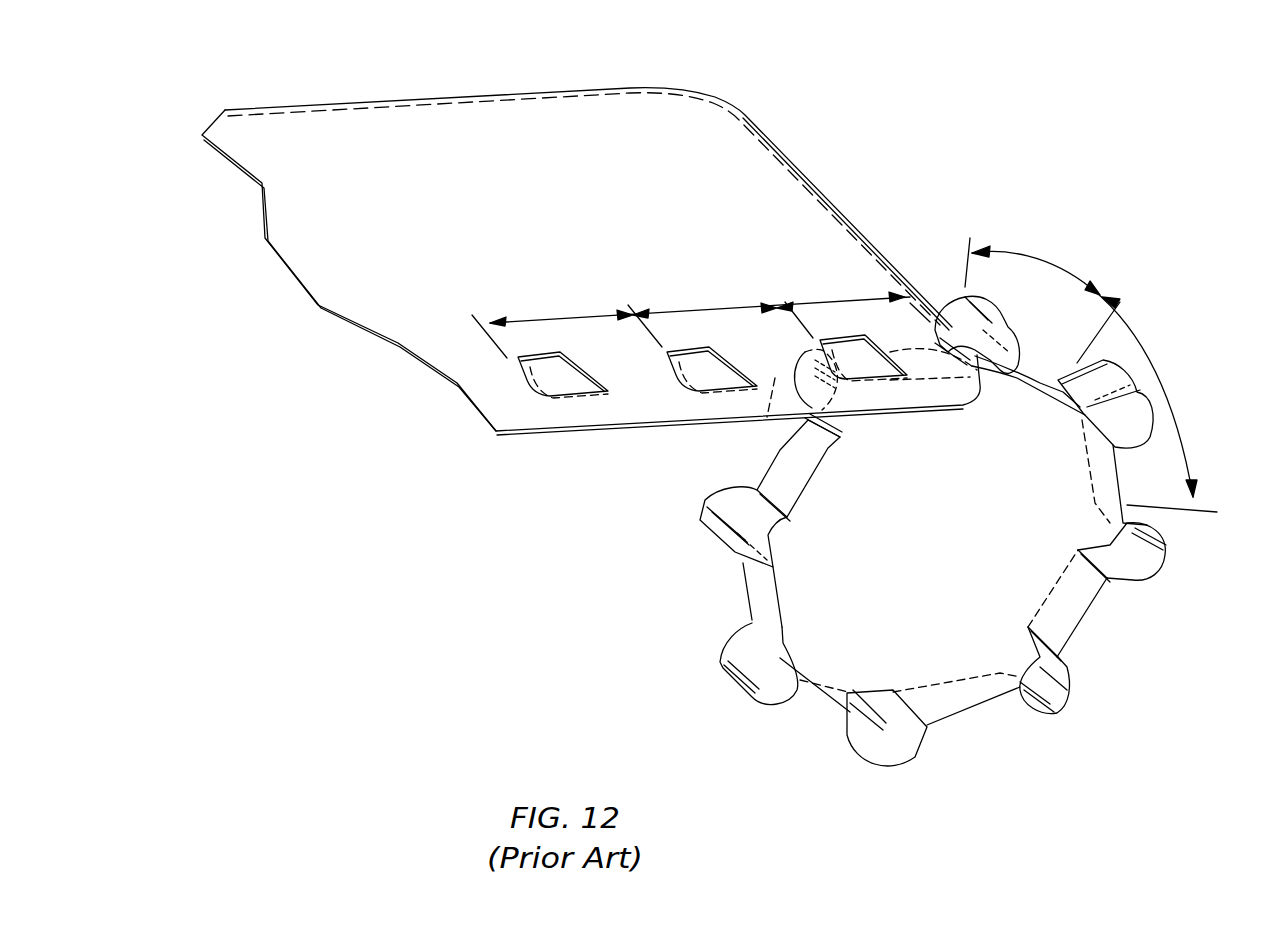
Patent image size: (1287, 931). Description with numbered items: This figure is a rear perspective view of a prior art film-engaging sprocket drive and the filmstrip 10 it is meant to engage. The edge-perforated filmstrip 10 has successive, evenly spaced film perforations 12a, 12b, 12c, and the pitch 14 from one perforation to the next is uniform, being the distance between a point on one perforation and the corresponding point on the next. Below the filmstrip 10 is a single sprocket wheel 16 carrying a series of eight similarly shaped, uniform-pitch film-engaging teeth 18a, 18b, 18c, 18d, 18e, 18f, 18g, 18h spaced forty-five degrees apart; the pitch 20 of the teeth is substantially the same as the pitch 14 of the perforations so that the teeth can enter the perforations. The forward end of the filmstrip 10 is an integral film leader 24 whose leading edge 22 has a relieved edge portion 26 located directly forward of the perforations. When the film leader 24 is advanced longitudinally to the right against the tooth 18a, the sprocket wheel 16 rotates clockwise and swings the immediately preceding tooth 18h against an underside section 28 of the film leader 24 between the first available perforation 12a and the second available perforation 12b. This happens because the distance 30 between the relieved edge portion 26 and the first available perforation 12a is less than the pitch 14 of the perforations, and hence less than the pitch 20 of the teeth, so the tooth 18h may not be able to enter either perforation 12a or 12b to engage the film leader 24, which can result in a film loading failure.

The filmstrip 10 is at (428, 86).
The film perforation 12a is at (890, 367).
The film perforation 12b is at (740, 370).
The film perforation 12c is at (590, 383).
The pitch of the film perforations 14 is at (549, 312).
The sprocket wheel 16 is at (1090, 631).
The film-engaging tooth 18a is at (950, 312).
The film-engaging tooth 18b is at (1145, 400).
The film-engaging tooth 18c is at (1167, 552).
The film-engaging tooth 18d is at (1057, 713).
The film-engaging tooth 18e is at (888, 770).
The film-engaging tooth 18f is at (747, 697).
The film-engaging tooth 18g is at (702, 520).
The film-engaging tooth 18h is at (803, 353).
The pitch of the teeth 20 is at (1047, 268).
The leading edge 22 is at (796, 158).
The film leader 24 is at (556, 110).
The relieved edge portion 26 is at (970, 357).
The underside section 28 is at (768, 428).
The distance 30 is at (835, 310).